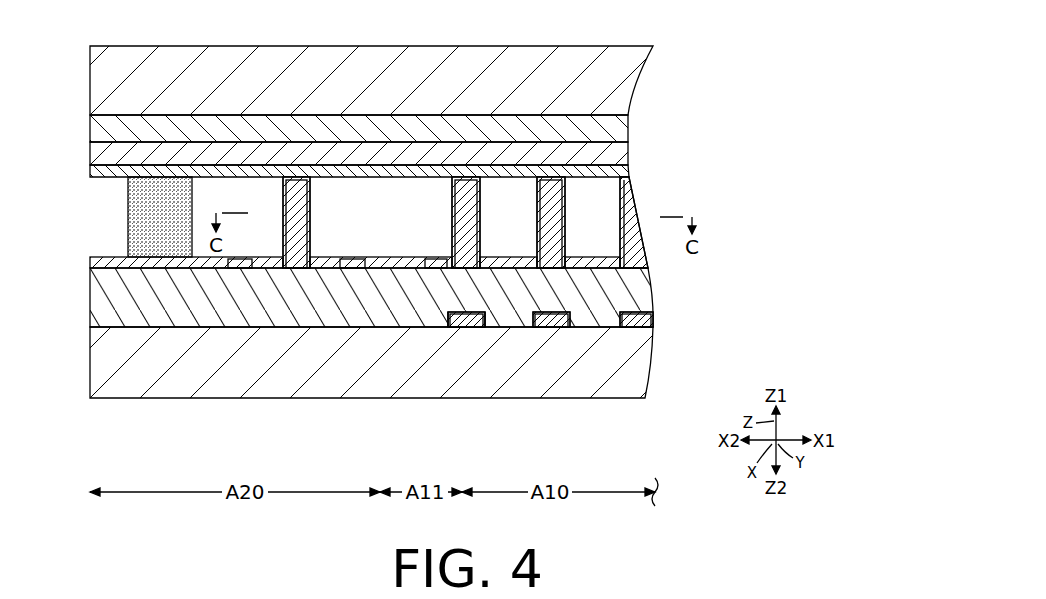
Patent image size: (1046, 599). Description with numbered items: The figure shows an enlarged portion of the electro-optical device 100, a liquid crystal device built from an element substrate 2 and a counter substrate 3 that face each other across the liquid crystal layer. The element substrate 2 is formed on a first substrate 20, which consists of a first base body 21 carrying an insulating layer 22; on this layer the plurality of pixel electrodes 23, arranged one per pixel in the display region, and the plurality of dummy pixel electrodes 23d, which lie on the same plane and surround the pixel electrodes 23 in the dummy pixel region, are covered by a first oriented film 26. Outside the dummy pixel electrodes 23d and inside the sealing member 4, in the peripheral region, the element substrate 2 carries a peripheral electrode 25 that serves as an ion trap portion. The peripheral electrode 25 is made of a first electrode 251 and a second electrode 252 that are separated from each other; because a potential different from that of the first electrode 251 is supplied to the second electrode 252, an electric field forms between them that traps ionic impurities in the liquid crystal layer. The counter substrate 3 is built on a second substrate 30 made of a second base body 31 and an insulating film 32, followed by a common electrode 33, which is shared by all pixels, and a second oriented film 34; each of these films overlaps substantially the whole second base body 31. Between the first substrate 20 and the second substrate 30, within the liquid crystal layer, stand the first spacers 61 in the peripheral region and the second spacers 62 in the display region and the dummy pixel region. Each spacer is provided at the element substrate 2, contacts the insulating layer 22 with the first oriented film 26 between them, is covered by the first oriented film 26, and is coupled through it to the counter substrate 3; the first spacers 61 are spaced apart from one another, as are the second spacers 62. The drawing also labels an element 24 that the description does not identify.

The electro-optical device 100 is at (666, 53).
The element substrate 2 is at (84, 350).
The counter substrate 3 is at (84, 130).
The first substrate 20 is at (712, 295).
The first base body 21 is at (645, 367).
The insulating layer 22 is at (640, 295).
The pixel electrodes 23 is at (538, 320).
The dummy pixel electrodes 23d is at (435, 263).
The insulating layer 24 is at (483, 318).
The peripheral electrode 25 is at (260, 450).
The first electrode 251 is at (352, 262).
The second electrode 252 is at (240, 262).
The first oriented film 26 is at (220, 262).
The second substrate 30 is at (698, 77).
The second base body 31 is at (623, 79).
The insulating film 32 is at (623, 128).
The common electrode 33 is at (623, 156).
The second oriented film 34 is at (141, 171).
The sealing member 4 is at (178, 215).
The first spacers 61 is at (297, 190).
The second spacers 62 is at (463, 190).